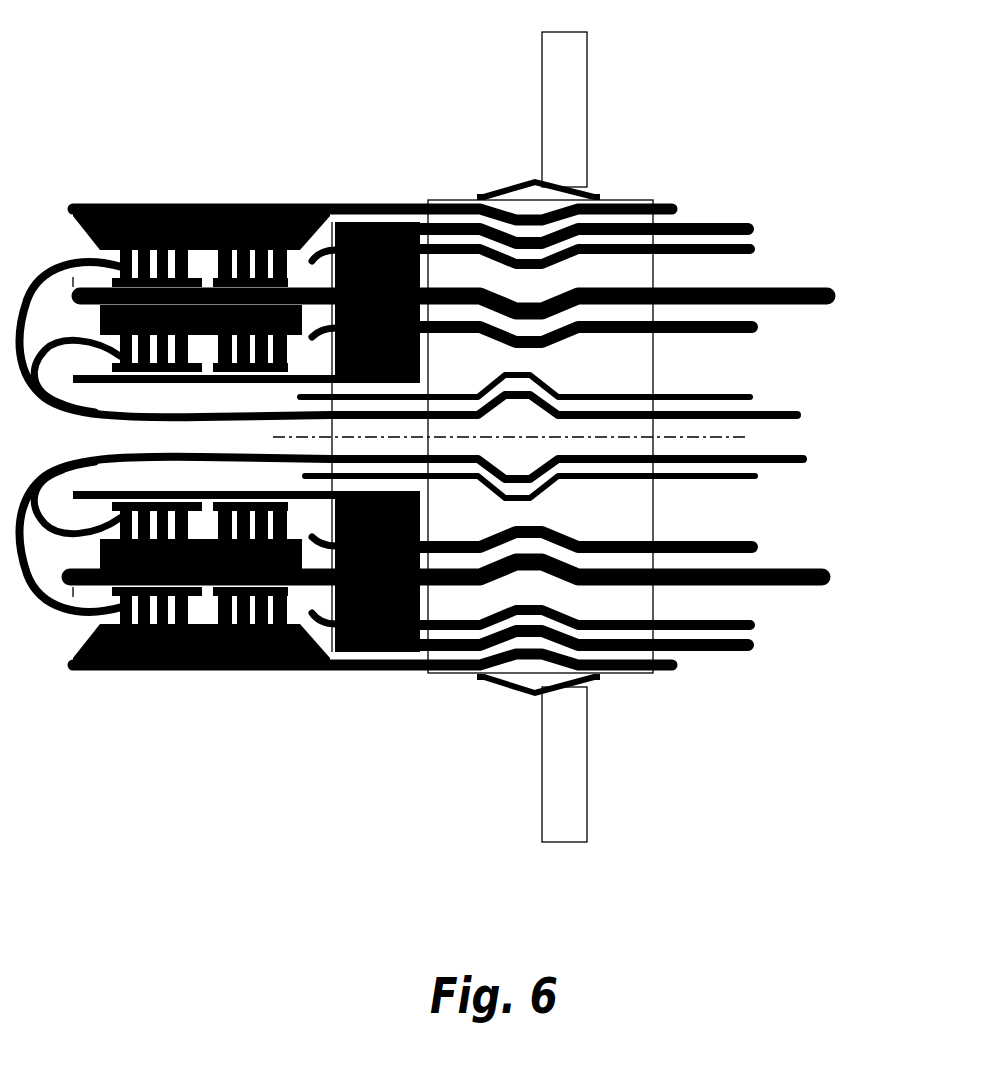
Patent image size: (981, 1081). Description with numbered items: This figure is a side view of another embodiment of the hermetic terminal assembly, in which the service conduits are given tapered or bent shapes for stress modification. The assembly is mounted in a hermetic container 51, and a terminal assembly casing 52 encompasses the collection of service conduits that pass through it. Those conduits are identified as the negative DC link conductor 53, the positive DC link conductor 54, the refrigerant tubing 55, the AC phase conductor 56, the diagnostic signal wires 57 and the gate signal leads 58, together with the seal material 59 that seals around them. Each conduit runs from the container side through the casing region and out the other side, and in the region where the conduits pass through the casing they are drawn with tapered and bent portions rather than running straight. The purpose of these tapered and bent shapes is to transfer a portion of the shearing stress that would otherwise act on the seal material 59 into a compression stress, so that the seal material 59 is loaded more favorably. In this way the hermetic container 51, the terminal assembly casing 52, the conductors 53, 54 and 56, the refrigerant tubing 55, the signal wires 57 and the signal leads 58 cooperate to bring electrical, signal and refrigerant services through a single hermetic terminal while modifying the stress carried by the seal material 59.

The hermetic container 51 is at (577, 97).
The terminal assembly casing 52 is at (593, 187).
The negative DC link conductor 53 is at (677, 210).
The positive DC link conductor 54 is at (755, 224).
The refrigerant tubing 55 is at (758, 248).
The AC phase conductor 56 is at (838, 296).
The diagnostic signal wires 57 is at (753, 396).
The gate signal leads 58 is at (801, 415).
The seal material 59 is at (622, 378).